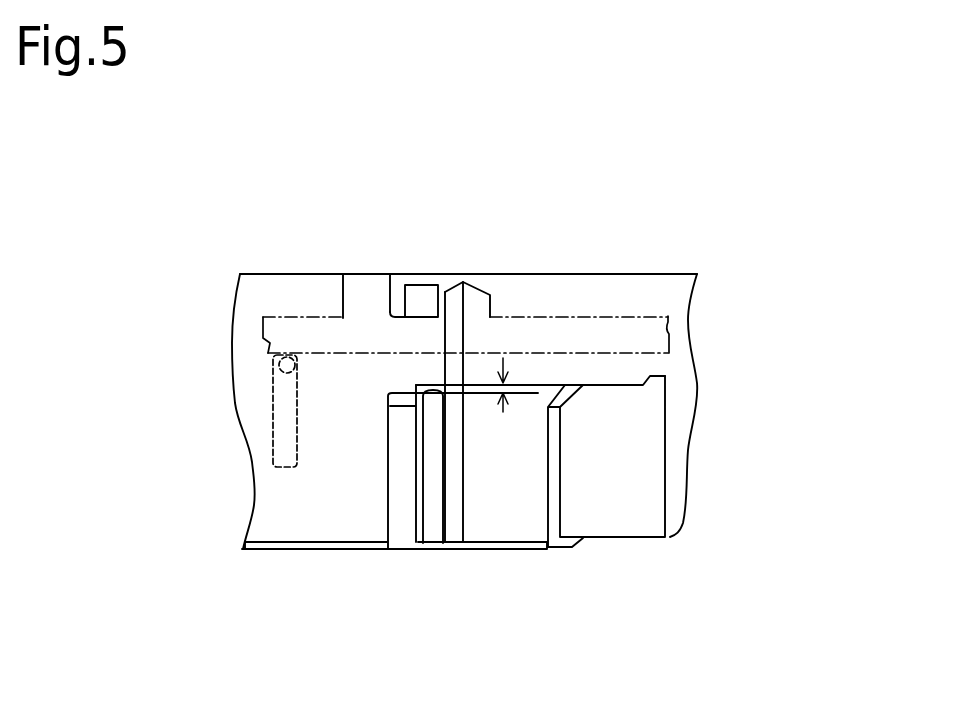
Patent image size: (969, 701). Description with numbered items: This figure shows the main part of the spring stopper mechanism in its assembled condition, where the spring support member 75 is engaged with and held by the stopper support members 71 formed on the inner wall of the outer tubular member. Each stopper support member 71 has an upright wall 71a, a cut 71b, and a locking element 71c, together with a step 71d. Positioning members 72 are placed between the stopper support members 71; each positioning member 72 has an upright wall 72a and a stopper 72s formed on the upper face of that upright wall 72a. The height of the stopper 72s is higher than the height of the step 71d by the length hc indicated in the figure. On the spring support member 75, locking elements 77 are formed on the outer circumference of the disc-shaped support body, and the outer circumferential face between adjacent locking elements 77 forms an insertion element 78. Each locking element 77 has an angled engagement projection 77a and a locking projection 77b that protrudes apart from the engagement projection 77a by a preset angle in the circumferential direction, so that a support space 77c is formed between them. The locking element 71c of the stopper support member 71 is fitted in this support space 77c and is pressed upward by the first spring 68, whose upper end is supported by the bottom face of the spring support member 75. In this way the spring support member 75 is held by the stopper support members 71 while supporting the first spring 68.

The first spring 68 is at (297, 408).
The stopper support member 71 is at (415, 488).
The upright wall 71a is at (465, 493).
The cut 71b is at (423, 360).
The locking element 71c is at (418, 320).
The step 71d is at (443, 543).
The positioning member 72 is at (648, 450).
The stopper 72s is at (622, 384).
The upright wall 72a is at (640, 428).
The spring support member 75 is at (592, 315).
The locking element 77 is at (451, 224).
The engagement projection 77a is at (502, 259).
The locking projection 77b is at (370, 292).
The support space 77c is at (399, 294).
The insertion element 78 is at (310, 300).
The length hc is at (508, 395).